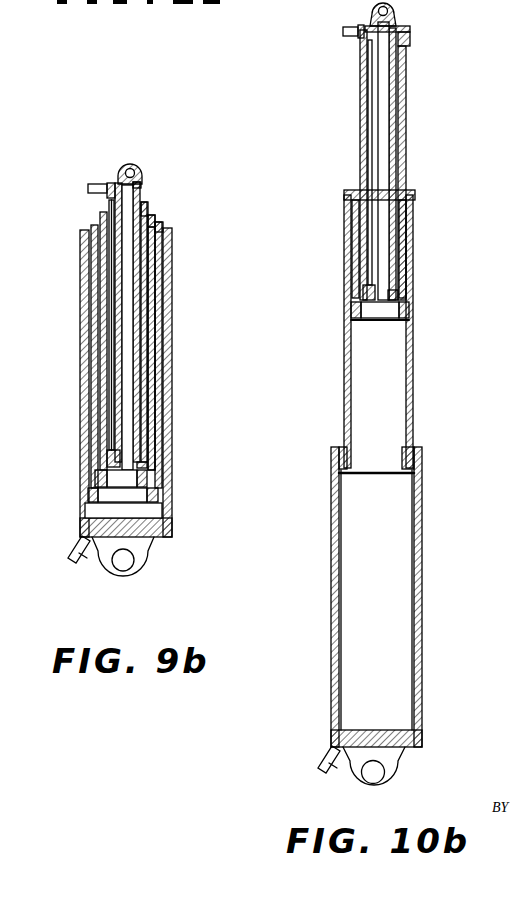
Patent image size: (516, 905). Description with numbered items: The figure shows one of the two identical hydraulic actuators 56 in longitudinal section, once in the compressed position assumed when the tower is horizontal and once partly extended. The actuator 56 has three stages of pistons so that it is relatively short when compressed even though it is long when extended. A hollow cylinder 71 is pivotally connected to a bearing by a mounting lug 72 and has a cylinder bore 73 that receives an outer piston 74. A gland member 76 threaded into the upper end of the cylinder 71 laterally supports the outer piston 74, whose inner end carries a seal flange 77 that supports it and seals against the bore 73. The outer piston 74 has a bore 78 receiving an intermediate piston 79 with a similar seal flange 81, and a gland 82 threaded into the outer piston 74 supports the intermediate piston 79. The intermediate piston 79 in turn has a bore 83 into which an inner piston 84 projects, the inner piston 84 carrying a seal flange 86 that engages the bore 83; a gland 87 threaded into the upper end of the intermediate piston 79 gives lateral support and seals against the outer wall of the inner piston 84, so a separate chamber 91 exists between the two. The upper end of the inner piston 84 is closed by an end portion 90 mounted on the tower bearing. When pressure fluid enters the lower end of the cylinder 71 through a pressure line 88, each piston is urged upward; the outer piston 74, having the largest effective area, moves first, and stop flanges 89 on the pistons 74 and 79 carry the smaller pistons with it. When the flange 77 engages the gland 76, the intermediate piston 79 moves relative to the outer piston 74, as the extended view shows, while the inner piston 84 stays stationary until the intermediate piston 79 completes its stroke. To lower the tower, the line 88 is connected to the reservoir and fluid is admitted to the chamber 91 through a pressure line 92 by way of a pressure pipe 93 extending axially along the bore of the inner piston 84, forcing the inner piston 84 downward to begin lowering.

In FIG. 9B, the actuator 56 is at (72, 266).
In FIG. 10B, the actuator 56 is at (432, 576).
In FIG. 9B, the hollow cylinder 71 is at (168, 418).
In FIG. 10B, the hollow cylinder 71 is at (421, 645).
In FIG. 9B, the mounting lug 72 is at (145, 560).
In FIG. 10B, the mounting lug 72 is at (396, 778).
In FIG. 9B, the cylinder bore 73 is at (158, 395).
In FIG. 10B, the cylinder bore 73 is at (418, 604).
In FIG. 9B, the outer piston 74 is at (150, 362).
In FIG. 10B, the outer piston 74 is at (413, 370).
In FIG. 9B, the gland member 76 is at (166, 230).
In FIG. 10B, the gland member 76 is at (413, 452).
In FIG. 9B, the seal flange 77 is at (165, 503).
In FIG. 10B, the seal flange 77 is at (411, 470).
In FIG. 9B, the bore 78 is at (147, 333).
In FIG. 10B, the bore 78 is at (402, 408).
In FIG. 9B, the intermediate piston 79 is at (146, 302).
In FIG. 10B, the intermediate piston 79 is at (407, 162).
In FIG. 9B, the seal flange 81 is at (148, 478).
In FIG. 10B, the seal flange 81 is at (410, 315).
In FIG. 9B, the gland 82 is at (158, 218).
In FIG. 10B, the gland 82 is at (412, 190).
In FIG. 9B, the bore 83 is at (140, 276).
In FIG. 10B, the bore 83 is at (398, 122).
In FIG. 9B, the inner piston 84 is at (141, 186).
In FIG. 10B, the inner piston 84 is at (404, 30).
In FIG. 9B, the seal flange 86 is at (141, 460).
In FIG. 10B, the seal flange 86 is at (398, 296).
In FIG. 9B, the gland 87 is at (148, 204).
In FIG. 10B, the gland 87 is at (410, 40).
In FIG. 9B, the pressure line 88 is at (78, 545).
In FIG. 10B, the pressure line 88 is at (322, 760).
In FIG. 9B, the stop flange 89 is at (103, 484).
In FIG. 10B, the stop flange 89 is at (392, 318).
In FIG. 9B, the end portion 90 is at (139, 170).
In FIG. 10B, the end portion 90 is at (396, 12).
In FIG. 9B, the chamber 91 is at (149, 254).
In FIG. 10B, the chamber 91 is at (396, 256).
In FIG. 9B, the pressure line 92 is at (101, 184).
In FIG. 10B, the pressure line 92 is at (352, 38).
In FIG. 9B, the pressure pipe 93 is at (121, 300).
In FIG. 10B, the pressure pipe 93 is at (383, 88).